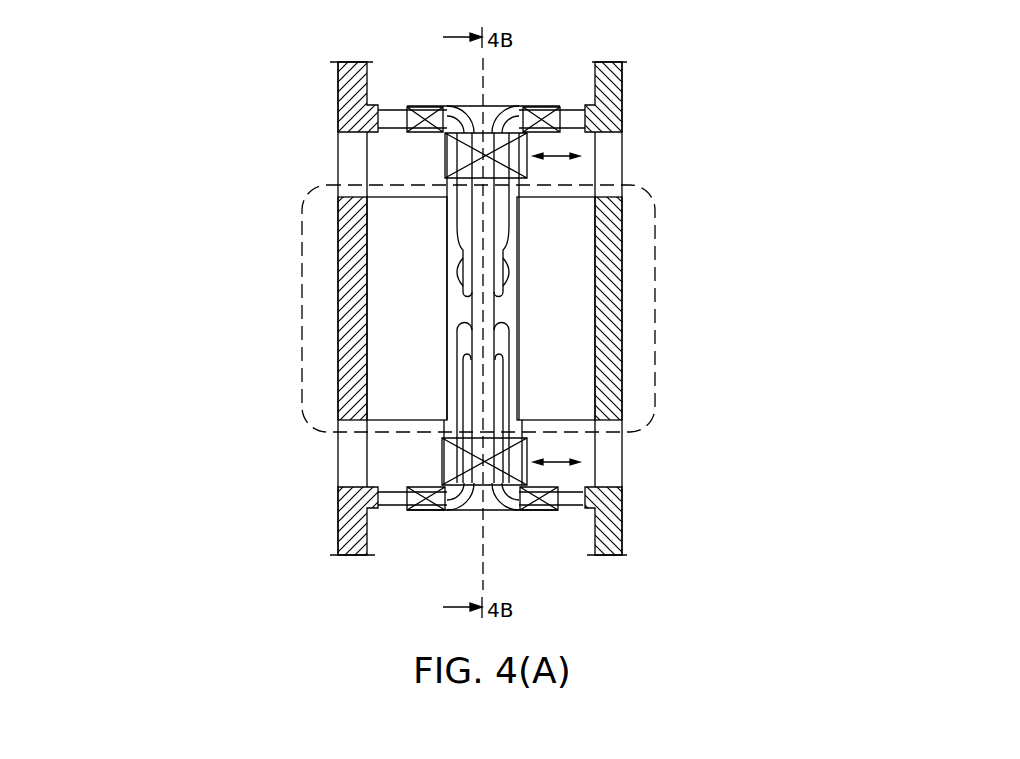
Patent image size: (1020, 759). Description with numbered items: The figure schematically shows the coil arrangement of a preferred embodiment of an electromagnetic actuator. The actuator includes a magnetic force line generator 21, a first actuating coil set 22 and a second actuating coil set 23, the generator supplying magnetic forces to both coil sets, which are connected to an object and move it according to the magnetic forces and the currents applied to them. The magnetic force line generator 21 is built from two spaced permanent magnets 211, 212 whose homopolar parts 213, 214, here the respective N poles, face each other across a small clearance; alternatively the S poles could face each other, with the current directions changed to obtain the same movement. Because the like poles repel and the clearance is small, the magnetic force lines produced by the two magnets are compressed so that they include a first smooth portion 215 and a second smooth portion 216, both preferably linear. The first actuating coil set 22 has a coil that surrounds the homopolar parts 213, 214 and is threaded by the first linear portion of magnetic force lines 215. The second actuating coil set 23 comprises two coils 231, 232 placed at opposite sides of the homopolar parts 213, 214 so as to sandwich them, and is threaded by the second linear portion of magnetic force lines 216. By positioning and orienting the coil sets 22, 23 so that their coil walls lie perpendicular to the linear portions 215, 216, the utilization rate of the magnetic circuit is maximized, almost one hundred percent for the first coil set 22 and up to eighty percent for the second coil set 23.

The magnetic force line generator 21 is at (657, 204).
The permanent magnet 211 is at (578, 273).
The permanent magnet 212 is at (387, 240).
The homopolar part 213 is at (537, 322).
The homopolar part 214 is at (428, 322).
The first smooth portion of magnetic force lines 215 is at (447, 186).
The second smooth portion of magnetic force lines 216 is at (396, 107).
The first actuating coil set 22 is at (518, 148).
The second actuating coil set 23 is at (545, 107).
The coil 231 is at (432, 107).
The coil 232 is at (427, 510).